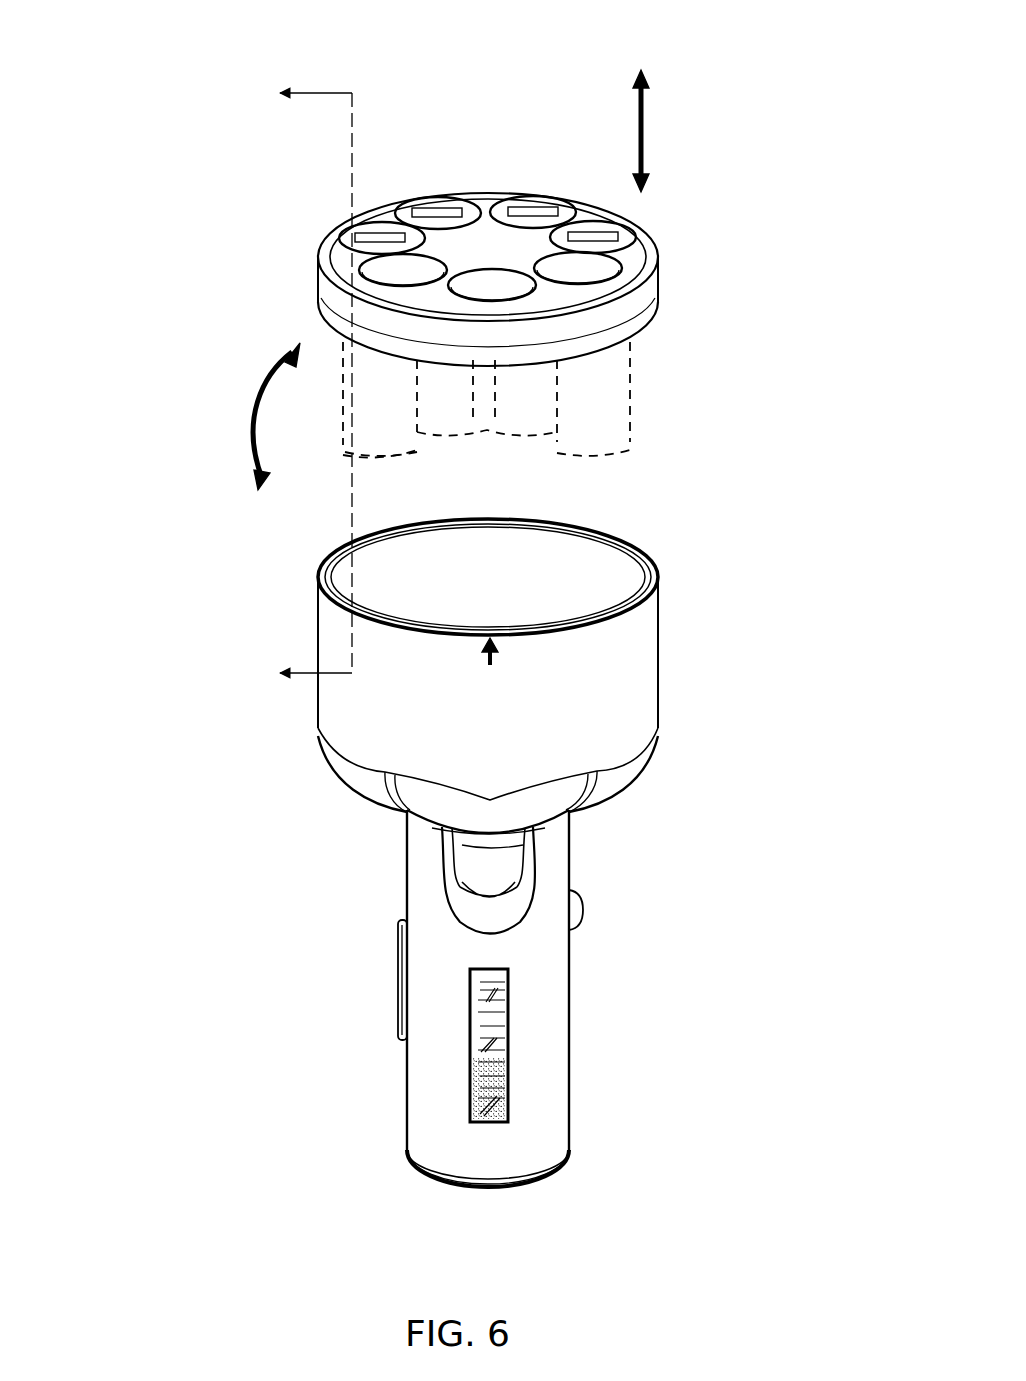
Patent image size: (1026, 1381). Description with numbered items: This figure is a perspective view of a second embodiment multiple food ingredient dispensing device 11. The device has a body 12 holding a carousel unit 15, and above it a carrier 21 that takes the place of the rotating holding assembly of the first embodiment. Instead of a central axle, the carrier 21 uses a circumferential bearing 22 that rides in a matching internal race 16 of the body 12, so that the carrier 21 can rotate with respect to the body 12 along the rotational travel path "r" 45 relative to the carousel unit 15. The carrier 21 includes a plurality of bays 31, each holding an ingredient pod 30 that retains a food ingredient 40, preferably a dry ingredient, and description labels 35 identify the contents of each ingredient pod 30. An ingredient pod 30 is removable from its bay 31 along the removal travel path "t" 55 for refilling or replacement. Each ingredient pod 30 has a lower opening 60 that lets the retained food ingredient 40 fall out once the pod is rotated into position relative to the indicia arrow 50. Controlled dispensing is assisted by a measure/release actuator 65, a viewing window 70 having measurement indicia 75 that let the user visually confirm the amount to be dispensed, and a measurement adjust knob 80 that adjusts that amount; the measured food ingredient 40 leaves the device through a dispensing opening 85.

The second embodiment multiple food ingredient dispensing device 11 is at (112, 182).
The body 12 is at (662, 720).
The carousel unit 15 is at (658, 637).
The internal race 16 is at (322, 554).
The carrier 21 is at (297, 274).
The circumferential bearing 22 is at (522, 363).
The ingredient pod 30 is at (622, 395).
The bay 31 is at (582, 277).
The description label 35 is at (445, 210).
The food ingredient 40 is at (512, 1060).
The rotational travel path "r" 45 is at (237, 421).
The indicia arrow 50 is at (488, 656).
The removal travel path "t" 55 is at (647, 140).
The lower opening 60 is at (573, 455).
The measure/release actuator 65 is at (400, 932).
The viewing window 70 is at (470, 1021).
The measurement indicia 75 is at (522, 1012).
The measurement adjust knob 80 is at (581, 900).
The dispensing opening 85 is at (403, 1160).